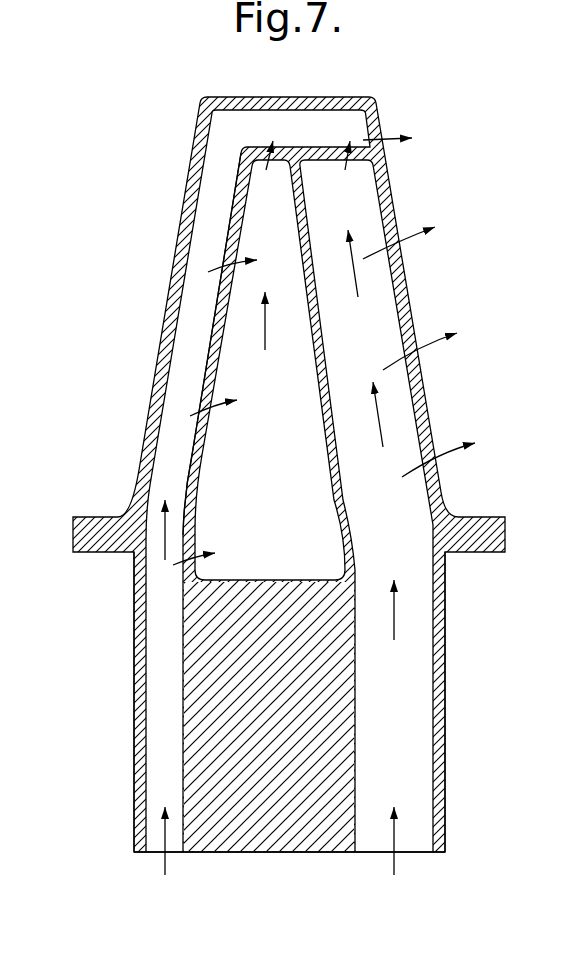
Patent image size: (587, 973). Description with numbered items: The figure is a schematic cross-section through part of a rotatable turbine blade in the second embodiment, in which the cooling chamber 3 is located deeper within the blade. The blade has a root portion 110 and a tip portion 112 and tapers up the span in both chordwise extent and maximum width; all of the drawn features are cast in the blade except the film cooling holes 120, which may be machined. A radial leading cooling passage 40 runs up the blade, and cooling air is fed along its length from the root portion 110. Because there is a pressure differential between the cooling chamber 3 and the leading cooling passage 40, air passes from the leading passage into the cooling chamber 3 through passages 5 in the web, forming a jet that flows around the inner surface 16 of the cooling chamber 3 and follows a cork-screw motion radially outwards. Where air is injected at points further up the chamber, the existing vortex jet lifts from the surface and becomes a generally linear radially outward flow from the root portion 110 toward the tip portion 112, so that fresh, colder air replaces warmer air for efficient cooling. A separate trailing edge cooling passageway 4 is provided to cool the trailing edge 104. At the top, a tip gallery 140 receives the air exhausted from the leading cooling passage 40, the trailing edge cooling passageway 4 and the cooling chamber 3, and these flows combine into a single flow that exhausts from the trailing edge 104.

The trailing edge 104 is at (296, 438).
The tip portion 112 is at (197, 125).
The root portion 110 is at (137, 603).
The inner surface 16 is at (192, 462).
The tip gallery 140 is at (283, 125).
The film cooling holes 120 is at (383, 147).
The passages 5 is at (232, 259).
The radial leading cooling passage 40 is at (213, 322).
The cooling chamber 3 is at (297, 392).
The trailing edge cooling passageway 4 is at (336, 222).